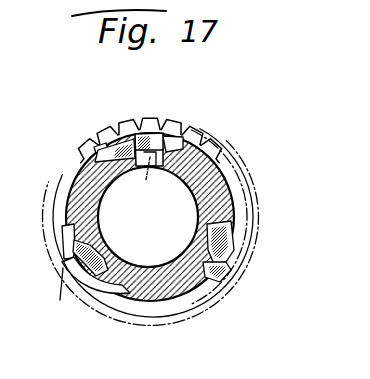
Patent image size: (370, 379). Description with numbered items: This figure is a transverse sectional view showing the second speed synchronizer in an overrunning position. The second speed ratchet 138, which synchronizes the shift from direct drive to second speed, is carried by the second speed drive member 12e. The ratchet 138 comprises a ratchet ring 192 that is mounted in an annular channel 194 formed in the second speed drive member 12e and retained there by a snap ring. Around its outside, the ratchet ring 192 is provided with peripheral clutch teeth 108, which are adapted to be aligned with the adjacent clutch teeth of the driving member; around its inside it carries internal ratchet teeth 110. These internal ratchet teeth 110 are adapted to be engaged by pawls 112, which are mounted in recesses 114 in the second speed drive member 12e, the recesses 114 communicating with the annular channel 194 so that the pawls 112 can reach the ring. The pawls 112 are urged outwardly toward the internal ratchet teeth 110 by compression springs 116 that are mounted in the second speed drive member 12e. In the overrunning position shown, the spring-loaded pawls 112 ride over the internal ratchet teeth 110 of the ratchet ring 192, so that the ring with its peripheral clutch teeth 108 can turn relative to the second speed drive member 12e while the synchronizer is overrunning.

The peripheral clutch teeth 108 is at (180, 116).
The internal ratchet teeth 110 is at (98, 297).
The pawls 112 is at (95, 146).
The recesses 114 is at (214, 268).
The compression springs 116 is at (148, 179).
The second speed ratchet 138 is at (153, 122).
The ratchet ring 192 is at (113, 137).
The annular channel 194 is at (216, 166).
The second speed drive member 12e is at (232, 188).